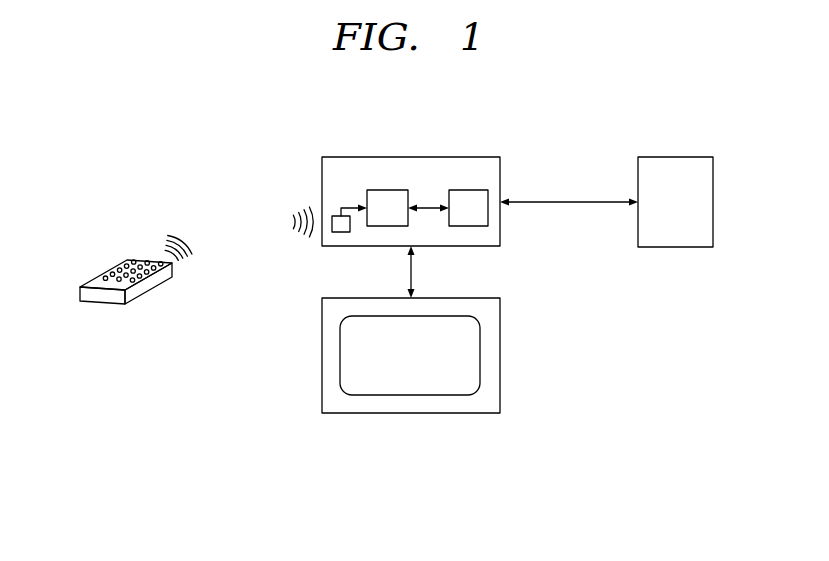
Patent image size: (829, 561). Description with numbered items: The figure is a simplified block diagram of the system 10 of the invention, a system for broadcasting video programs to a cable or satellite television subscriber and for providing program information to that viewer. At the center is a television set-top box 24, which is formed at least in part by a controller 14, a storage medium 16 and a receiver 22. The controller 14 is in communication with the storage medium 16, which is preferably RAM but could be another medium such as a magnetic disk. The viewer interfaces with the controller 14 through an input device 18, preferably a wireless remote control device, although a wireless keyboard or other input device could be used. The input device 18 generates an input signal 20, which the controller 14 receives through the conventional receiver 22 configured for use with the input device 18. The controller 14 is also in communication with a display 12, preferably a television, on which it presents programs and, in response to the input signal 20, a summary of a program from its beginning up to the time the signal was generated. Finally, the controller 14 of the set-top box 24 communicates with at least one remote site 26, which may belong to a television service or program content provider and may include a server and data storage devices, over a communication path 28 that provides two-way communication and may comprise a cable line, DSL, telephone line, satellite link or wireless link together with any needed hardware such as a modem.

The system 10 is at (486, 102).
The display 12 is at (500, 357).
The controller 14 is at (388, 190).
The storage medium 16 is at (459, 190).
The input device 18 is at (110, 275).
The input signal 20 is at (272, 200).
The receiver 22 is at (340, 232).
The television set-top box 24 is at (352, 157).
The remote site 26 is at (683, 157).
The communication path 28 is at (571, 200).